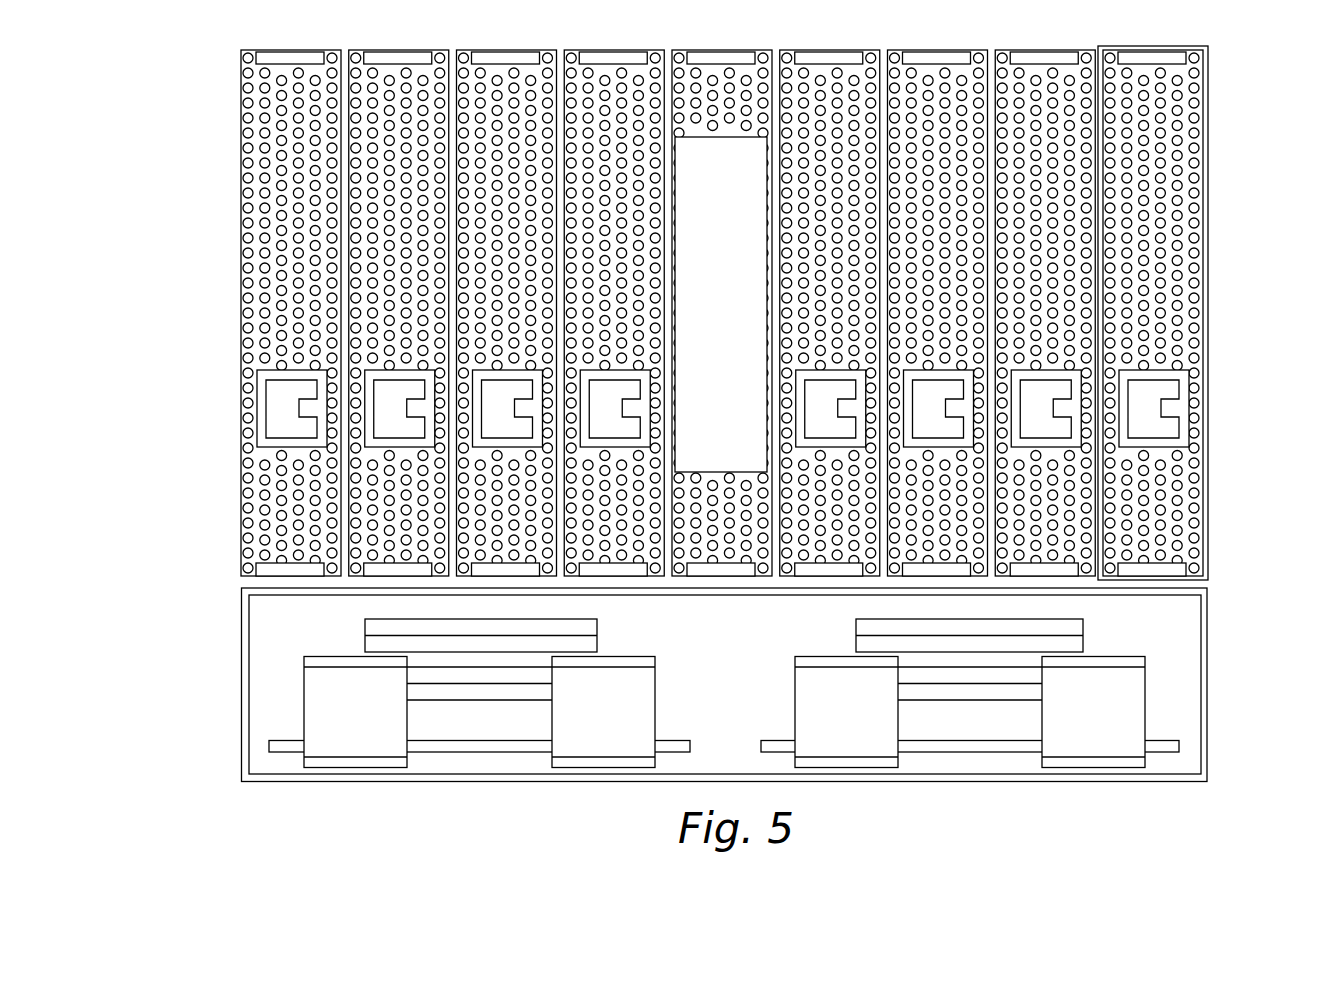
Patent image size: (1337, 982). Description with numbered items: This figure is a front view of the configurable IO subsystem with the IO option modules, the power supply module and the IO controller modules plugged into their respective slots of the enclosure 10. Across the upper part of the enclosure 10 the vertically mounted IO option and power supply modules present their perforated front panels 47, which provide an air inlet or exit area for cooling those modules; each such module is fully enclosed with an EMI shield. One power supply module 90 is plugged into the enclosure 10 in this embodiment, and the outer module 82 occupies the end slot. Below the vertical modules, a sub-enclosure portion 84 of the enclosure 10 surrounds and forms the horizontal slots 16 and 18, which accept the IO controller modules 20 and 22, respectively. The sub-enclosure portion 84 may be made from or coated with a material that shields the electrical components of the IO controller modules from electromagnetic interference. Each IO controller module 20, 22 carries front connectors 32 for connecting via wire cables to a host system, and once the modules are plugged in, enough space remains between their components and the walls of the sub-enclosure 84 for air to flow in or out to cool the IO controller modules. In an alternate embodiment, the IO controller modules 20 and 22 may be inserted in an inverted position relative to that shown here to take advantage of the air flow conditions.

The enclosure 10 is at (220, 125).
The perforated front panel 47 is at (322, 97).
The power supply module 90 is at (717, 170).
The filler carrier 82 is at (1207, 348).
The horizontal slot 16 is at (285, 633).
The sub-enclosure portion 84 is at (1143, 593).
The horizontal slot 18 is at (1140, 635).
The IO controller module 20 is at (473, 748).
The IO controller module 22 is at (987, 752).
The front connector 32 is at (343, 725).